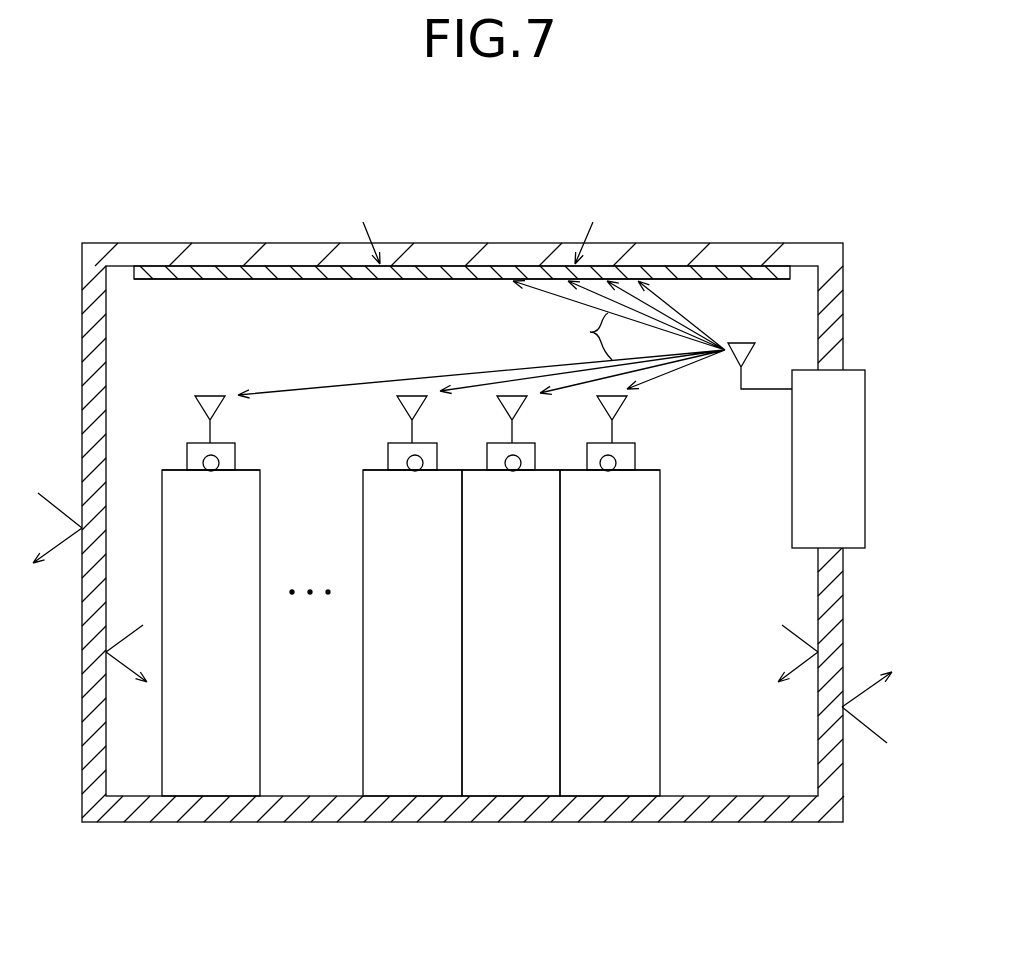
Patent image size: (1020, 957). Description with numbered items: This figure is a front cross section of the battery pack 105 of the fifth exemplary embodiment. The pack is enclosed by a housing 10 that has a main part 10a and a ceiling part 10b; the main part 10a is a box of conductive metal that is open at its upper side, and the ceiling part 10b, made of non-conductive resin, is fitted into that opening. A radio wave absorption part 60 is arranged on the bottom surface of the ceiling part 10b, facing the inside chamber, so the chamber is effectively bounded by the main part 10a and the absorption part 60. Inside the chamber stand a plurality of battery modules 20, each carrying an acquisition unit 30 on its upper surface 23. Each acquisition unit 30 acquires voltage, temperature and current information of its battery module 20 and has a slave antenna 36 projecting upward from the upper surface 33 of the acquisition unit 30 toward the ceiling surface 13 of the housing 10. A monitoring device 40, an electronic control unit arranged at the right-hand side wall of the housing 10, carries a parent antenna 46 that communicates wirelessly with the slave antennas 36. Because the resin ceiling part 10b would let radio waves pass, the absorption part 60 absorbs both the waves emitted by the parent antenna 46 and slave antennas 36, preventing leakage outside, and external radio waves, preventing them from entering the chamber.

The battery pack 105 is at (803, 150).
The housing 10 is at (835, 312).
The main part 10a is at (757, 818).
The ceiling part 10b is at (143, 252).
The ceiling surface 13 is at (306, 274).
The radio wave absorption part 60 is at (487, 281).
The parent antenna 46 is at (741, 343).
The monitoring device 40 is at (855, 470).
The battery module 20 is at (212, 778).
The upper surface 23 is at (213, 470).
The acquisition unit 30 is at (236, 455).
The upper surface 33 is at (190, 440).
The slave antenna 36 is at (200, 404).